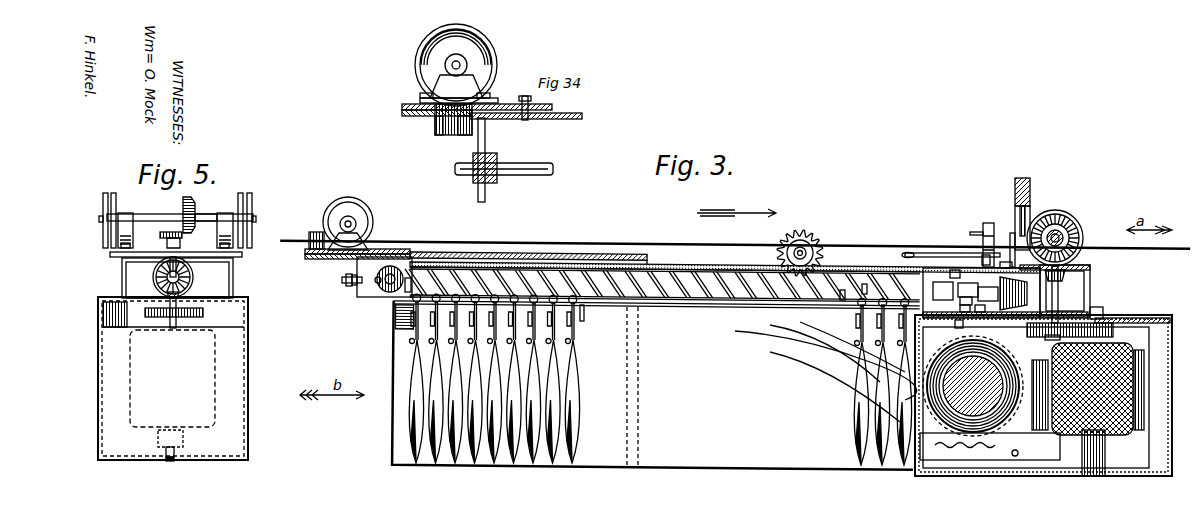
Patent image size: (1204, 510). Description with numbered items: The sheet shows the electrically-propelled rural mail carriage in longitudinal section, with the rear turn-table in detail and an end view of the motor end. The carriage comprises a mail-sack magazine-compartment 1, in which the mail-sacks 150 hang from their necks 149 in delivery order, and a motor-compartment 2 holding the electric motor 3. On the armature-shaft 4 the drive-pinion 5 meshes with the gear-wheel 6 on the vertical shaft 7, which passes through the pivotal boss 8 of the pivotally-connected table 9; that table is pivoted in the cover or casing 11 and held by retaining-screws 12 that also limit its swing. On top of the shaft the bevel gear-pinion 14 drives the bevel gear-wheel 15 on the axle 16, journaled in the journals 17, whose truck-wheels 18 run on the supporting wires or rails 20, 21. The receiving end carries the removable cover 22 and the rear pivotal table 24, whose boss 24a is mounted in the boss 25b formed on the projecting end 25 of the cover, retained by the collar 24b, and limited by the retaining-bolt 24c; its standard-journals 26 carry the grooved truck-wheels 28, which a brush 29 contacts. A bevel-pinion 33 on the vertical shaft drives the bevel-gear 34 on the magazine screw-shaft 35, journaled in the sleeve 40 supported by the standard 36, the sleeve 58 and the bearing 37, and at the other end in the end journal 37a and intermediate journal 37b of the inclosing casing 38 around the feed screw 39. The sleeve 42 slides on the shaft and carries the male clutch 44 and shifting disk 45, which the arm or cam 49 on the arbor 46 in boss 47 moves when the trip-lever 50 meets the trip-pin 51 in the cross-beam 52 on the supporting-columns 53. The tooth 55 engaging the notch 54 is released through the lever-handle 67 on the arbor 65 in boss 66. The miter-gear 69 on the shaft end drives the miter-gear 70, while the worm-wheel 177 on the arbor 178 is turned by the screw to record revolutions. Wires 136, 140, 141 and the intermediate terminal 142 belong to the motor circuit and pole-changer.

In FIG. 3, the mail-sack magazine-compartment 1 is at (653, 385).
In FIG. 3, the motor-compartment 2 is at (995, 470).
In FIG. 5, the electric motor 3 is at (130, 405).
In FIG. 3, the electric motor 3 is at (1115, 438).
In FIG. 5, the armature-shaft 4 is at (182, 299).
In FIG. 3, the armature-shaft 4 is at (1103, 308).
In FIG. 5, the drive-pinion 5 is at (170, 325).
In FIG. 3, the drive-pinion 5 is at (1113, 330).
In FIG. 5, the gear-wheel 6 is at (204, 313).
In FIG. 3, the gear-wheel 6 is at (1030, 328).
In FIG. 5, the vertical shaft 7 is at (196, 282).
In FIG. 3, the vertical shaft 7 is at (1060, 300).
In FIG. 5, the journal or pivotal boss 8 is at (156, 266).
In FIG. 5, the pivotally-connected table 9 is at (112, 256).
In FIG. 5, the cover or casing 11 is at (122, 283).
In FIG. 3, the retaining-screws 12 is at (1070, 262).
In FIG. 5, the bevel gear-pinion 14 is at (163, 236).
In FIG. 3, the bevel gear-pinion 14 is at (1084, 248).
In FIG. 5, the bevel gear-wheel 15 is at (197, 213).
In FIG. 3, the bevel gear-wheel 15 is at (1058, 222).
In FIG. 5, the axle 16 is at (172, 218).
In FIG. 3, the axle 16 is at (1083, 236).
In FIG. 5, the journals 17 is at (122, 214).
In FIG. 5, the truck-wheels 18 is at (103, 204).
In FIG. 3, the truck-wheels 18 is at (1076, 221).
In FIG. 3, the supporting wire or rail 20 is at (596, 245).
In FIG. 3, the supporting wire or rail 21 is at (1013, 293).
In FIG. 34, the removable cover 22 is at (565, 119).
In FIG. 3, the removable cover 22 is at (462, 252).
In FIG. 34, the rear pivotal table 24 is at (402, 106).
In FIG. 3, the rear pivotal table 24 is at (306, 251).
In FIG. 34, the boss 24a is at (435, 118).
In FIG. 34, the collar 24b is at (460, 133).
In FIG. 34, the retaining-bolt 24c is at (538, 105).
In FIG. 34, the projecting end of the cover 25 is at (402, 116).
In FIG. 3, the projecting end of the cover 25 is at (310, 259).
In FIG. 34, the plate part 25b is at (440, 125).
In FIG. 34, the standard-journals 26 is at (459, 89).
In FIG. 3, the standard-journals 26 is at (366, 240).
In FIG. 34, the grooved truck-wheels 28 is at (418, 57).
In FIG. 3, the grooved truck-wheels 28 is at (352, 206).
In FIG. 3, the brush 29 is at (314, 233).
In FIG. 3, the bevel-pinion 33 is at (1087, 290).
In FIG. 3, the bevel-gear 34 is at (974, 330).
In FIG. 3, the magazine screw-shaft 35 is at (345, 283).
In FIG. 34, the standard 36 is at (518, 165).
In FIG. 34, the bearing 37 is at (478, 176).
In FIG. 3, the bearing 37 is at (864, 273).
In FIG. 3, the end journal 37a is at (358, 290).
In FIG. 3, the intermediate journal 37b is at (406, 294).
In FIG. 3, the inclosing casing 38 is at (678, 272).
In FIG. 3, the feed or magazine screw 39 is at (695, 304).
In FIG. 3, the sleeve 40 is at (981, 304).
In FIG. 3, the sleeve 42 is at (970, 313).
In FIG. 3, the male clutch 44 is at (988, 296).
In FIG. 3, the shifting disk 45 is at (987, 313).
In FIG. 3, the arbor 46 is at (992, 236).
In FIG. 3, the boss 47 is at (1010, 250).
In FIG. 3, the arm or cam 49 is at (979, 255).
In FIG. 3, the trip-lever 50 is at (970, 233).
In FIG. 3, the trip-pin 51 is at (1015, 210).
In FIG. 3, the cross-beam 52 is at (1032, 185).
In FIG. 3, the supporting-columns 53 is at (1032, 210).
In FIG. 3, the notch 54 is at (972, 287).
In FIG. 3, the tooth 55 is at (970, 298).
In FIG. 3, the sleeve 58 is at (939, 283).
In FIG. 3, the arbor 65 is at (952, 245).
In FIG. 3, the boss 66 is at (954, 275).
In FIG. 3, the lever-handle 67 is at (930, 252).
In FIG. 3, the miter-gear 69 is at (384, 288).
In FIG. 3, the miter-gear 70 is at (711, 277).
In FIG. 3, the wire 136 is at (822, 382).
In FIG. 3, the wire 140 is at (811, 361).
In FIG. 3, the wire 141 is at (806, 345).
In FIG. 3, the intermediate terminal 142 is at (839, 339).
In FIG. 3, the neck 149 is at (400, 310).
In FIG. 3, the mail-sack 150 is at (458, 466).
In FIG. 3, the worm-wheel 177 is at (810, 240).
In FIG. 3, the arbor 178 is at (806, 253).